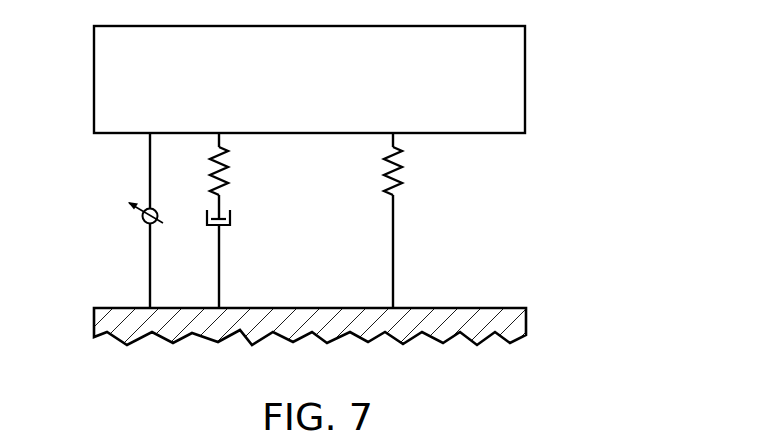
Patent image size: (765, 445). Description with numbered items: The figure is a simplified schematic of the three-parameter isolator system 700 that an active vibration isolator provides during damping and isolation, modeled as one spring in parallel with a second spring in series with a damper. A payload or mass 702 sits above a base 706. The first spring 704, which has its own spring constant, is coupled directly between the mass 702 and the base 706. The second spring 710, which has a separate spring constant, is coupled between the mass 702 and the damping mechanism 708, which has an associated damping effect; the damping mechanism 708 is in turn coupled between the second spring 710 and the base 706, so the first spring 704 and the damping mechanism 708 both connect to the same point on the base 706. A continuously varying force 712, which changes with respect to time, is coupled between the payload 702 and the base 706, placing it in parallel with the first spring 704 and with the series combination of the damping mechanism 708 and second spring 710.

The three-parameter isolator system 700 is at (349, 187).
The mass 702 is at (495, 127).
The first spring 704 is at (434, 220).
The base 706 is at (483, 308).
The damping mechanism 708 is at (268, 251).
The second spring 710 is at (266, 175).
The continuously varying force 712 is at (98, 220).